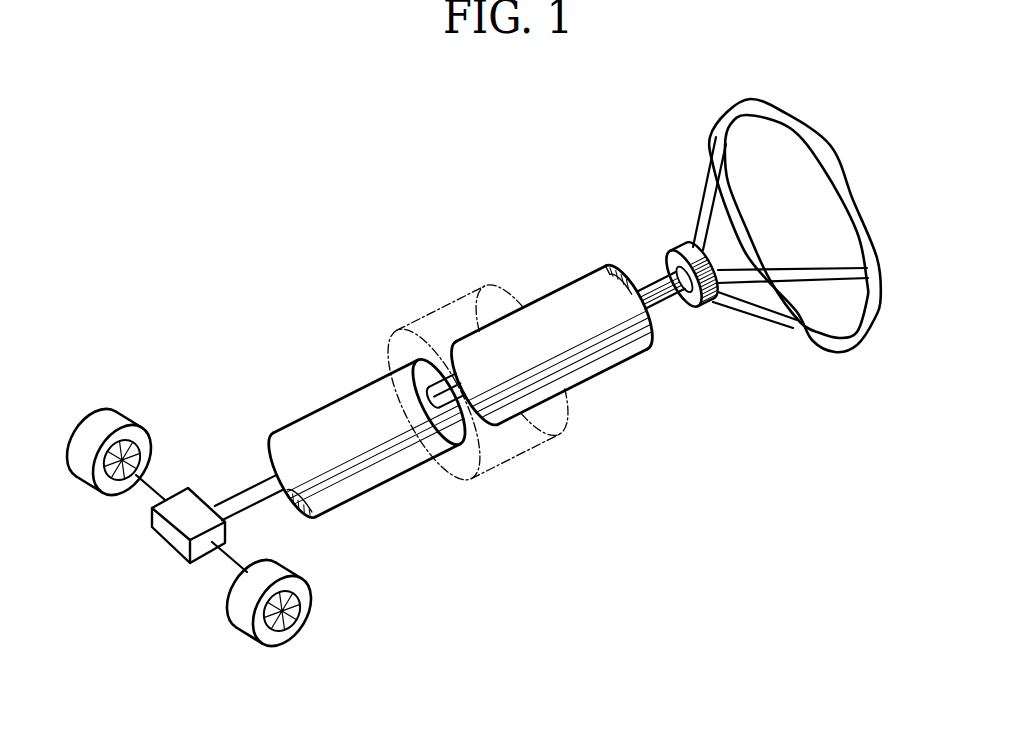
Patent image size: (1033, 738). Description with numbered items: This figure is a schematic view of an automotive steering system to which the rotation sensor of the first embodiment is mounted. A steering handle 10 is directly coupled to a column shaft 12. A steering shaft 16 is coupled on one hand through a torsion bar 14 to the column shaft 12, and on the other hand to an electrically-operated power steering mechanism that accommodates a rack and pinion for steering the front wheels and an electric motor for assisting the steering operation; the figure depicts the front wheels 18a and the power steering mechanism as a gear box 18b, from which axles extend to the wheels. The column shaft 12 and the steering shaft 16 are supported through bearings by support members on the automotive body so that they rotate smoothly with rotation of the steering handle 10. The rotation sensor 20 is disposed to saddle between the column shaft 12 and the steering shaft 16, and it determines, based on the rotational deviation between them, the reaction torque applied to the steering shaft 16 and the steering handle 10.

The steering handle 10 is at (818, 340).
The column shaft 12 is at (585, 363).
The torsion bar 14 is at (437, 455).
The steering shaft 16 is at (335, 418).
The wheels 18a is at (115, 417).
The steering gear box 18b is at (173, 542).
The rotation sensor 20 is at (412, 318).